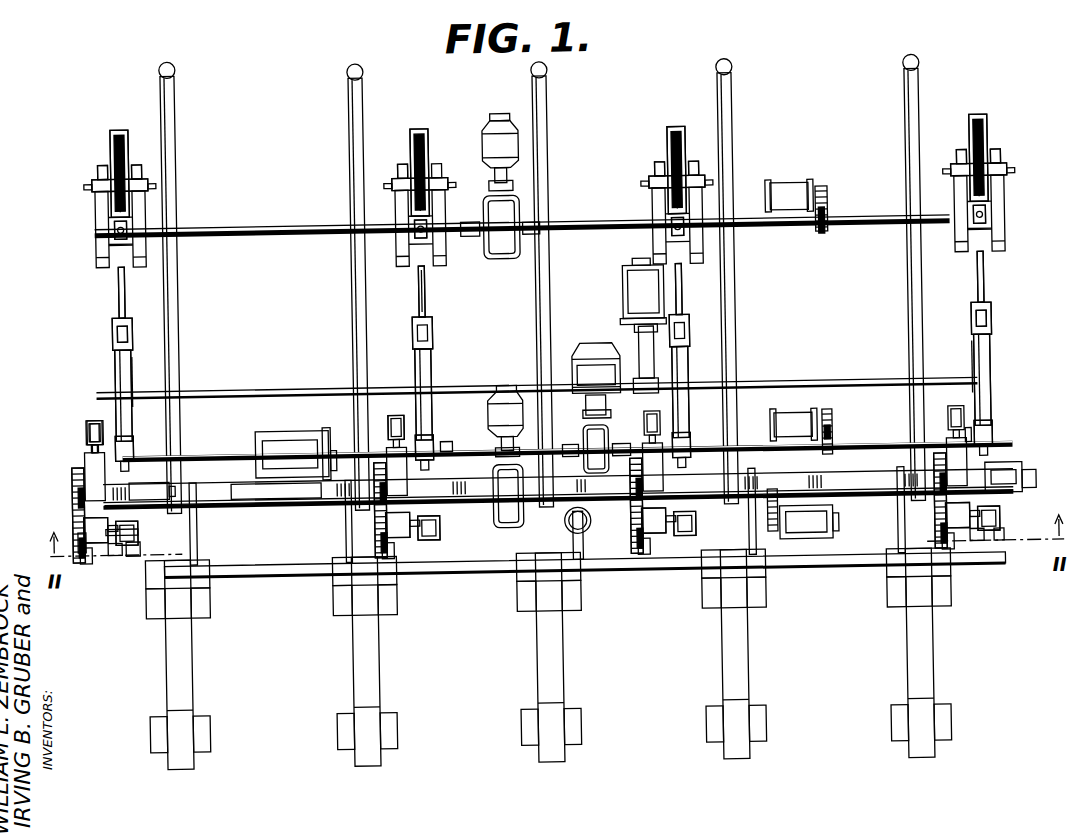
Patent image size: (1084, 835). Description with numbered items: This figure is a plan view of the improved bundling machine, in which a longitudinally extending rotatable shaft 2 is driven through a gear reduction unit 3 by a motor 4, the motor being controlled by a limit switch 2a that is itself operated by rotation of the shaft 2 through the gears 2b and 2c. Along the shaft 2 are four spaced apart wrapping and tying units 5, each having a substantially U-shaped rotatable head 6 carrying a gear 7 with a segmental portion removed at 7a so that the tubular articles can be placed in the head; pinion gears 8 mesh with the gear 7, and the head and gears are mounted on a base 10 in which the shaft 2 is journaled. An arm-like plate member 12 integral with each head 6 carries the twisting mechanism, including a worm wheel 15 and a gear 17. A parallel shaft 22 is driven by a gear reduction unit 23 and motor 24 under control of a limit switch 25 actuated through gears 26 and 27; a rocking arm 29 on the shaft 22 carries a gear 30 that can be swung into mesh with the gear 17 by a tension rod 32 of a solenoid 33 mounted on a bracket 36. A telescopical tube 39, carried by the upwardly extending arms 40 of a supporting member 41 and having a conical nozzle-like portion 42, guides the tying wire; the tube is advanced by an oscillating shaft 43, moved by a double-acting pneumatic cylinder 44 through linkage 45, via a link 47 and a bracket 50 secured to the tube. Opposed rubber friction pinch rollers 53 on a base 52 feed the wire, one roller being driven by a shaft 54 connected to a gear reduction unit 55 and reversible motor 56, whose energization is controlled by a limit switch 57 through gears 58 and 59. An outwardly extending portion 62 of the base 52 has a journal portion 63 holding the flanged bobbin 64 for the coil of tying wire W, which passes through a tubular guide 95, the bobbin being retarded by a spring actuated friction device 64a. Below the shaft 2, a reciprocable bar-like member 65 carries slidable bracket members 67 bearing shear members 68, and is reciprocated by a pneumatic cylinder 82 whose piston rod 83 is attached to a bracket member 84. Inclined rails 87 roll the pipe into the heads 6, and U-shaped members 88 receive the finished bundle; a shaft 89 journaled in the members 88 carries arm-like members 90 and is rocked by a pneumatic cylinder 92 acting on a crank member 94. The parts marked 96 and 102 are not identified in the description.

The rotatable shaft 2 is at (262, 498).
The limit switch 2a is at (826, 543).
The gear 2b is at (834, 540).
The gear 2c is at (771, 535).
The gear reduction unit 3 is at (508, 496).
The motor 4 is at (505, 390).
The wrapping and tying unit 5 is at (136, 534).
The rotatable head 6 is at (88, 558).
The gear 7 is at (82, 495).
The segmental portion removed 7a is at (78, 530).
The pinion gear 8 is at (72, 465).
The base 10 is at (86, 455).
The plate member 12 is at (136, 525).
The worm wheel 15 is at (130, 549).
The gear 17 is at (112, 548).
The rotatable shaft 22 is at (310, 450).
The gear reduction unit 23 is at (598, 445).
The motor 24 is at (596, 352).
The limit switch 25 is at (790, 422).
The gear 26 is at (827, 414).
The gear 27 is at (832, 436).
The rocking arm 29 is at (428, 335).
The gear 30 is at (410, 422).
The tension rod 32 is at (92, 441).
The solenoid 33 is at (88, 418).
The bracket 36 is at (96, 413).
The telescopical tube 39 is at (132, 375).
The arm 40 is at (114, 322).
The supporting member 41 is at (114, 322).
The nozzle-like portion 42 is at (446, 452).
The shaft 43 is at (277, 385).
The pneumatic cylinder 44 is at (640, 283).
The linkage 45 is at (640, 340).
The link 47 is at (134, 355).
The bracket 50 is at (130, 340).
The base 52 is at (99, 238).
The pinch rollers 53 is at (118, 224).
The rotatable shaft 54 is at (250, 222).
The gear reduction unit 55 is at (505, 245).
The reversible motor 56 is at (518, 118).
The limit switch 57 is at (795, 198).
The gear 58 is at (825, 191).
The gear 59 is at (825, 238).
The outwardly extending portion 62 is at (96, 178).
The journal portion 63 is at (102, 163).
The bobbin 64 is at (113, 135).
The friction device 64a is at (146, 170).
The bar-like member 65 is at (278, 556).
The bracket member 67 is at (152, 476).
The shear member 68 is at (1028, 478).
The pneumatic cylinder 82 is at (280, 430).
The piston rod 83 is at (330, 452).
The bracket member 84 is at (282, 500).
The inclined rail 87 is at (181, 270).
The U-shaped member 88 is at (190, 663).
The shaft 89 is at (462, 572).
The arm-like member 90 is at (195, 522).
The pneumatic cylinder 92 is at (589, 523).
The crank member 94 is at (581, 547).
The tubular guide 95 is at (133, 213).
The bracket 96 is at (172, 480).
The bearing 102 is at (995, 548).
The tying wire W is at (126, 128).